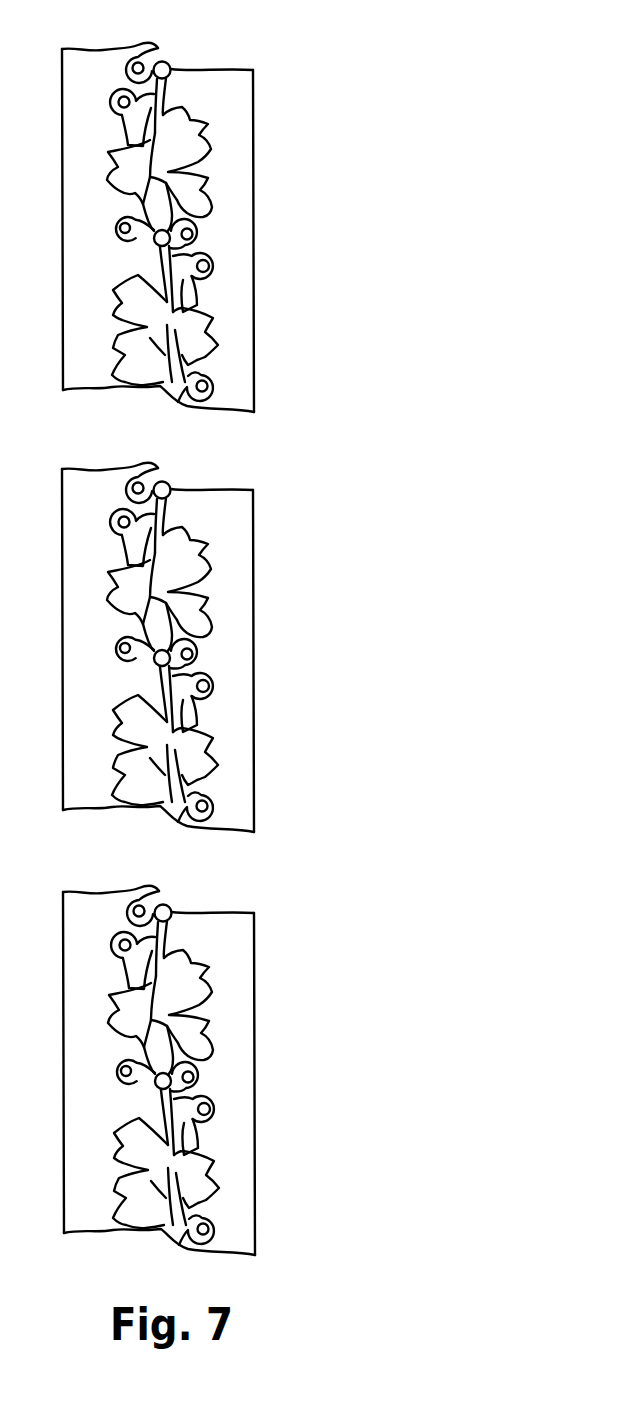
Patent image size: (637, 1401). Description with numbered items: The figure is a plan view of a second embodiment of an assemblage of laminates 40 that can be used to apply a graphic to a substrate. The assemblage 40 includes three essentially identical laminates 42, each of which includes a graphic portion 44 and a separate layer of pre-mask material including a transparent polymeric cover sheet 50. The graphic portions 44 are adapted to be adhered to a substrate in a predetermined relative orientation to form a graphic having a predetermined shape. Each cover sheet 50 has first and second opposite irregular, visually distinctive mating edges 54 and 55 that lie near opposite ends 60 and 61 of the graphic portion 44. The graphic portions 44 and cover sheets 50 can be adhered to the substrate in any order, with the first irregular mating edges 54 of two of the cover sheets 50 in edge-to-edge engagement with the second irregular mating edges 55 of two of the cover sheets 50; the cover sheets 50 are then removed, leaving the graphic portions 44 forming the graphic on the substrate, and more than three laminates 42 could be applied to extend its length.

The assemblage of laminates 40 is at (211, 222).
The laminate 42 is at (255, 625).
The graphic portion 44 is at (110, 607).
The transparent polymeric cover sheet 50 is at (247, 528).
The first irregular mating edge 54 is at (172, 490).
The second irregular mating edge 55 is at (195, 827).
The first end of graphic portion 60 is at (162, 480).
The second end of graphic portion 61 is at (165, 803).